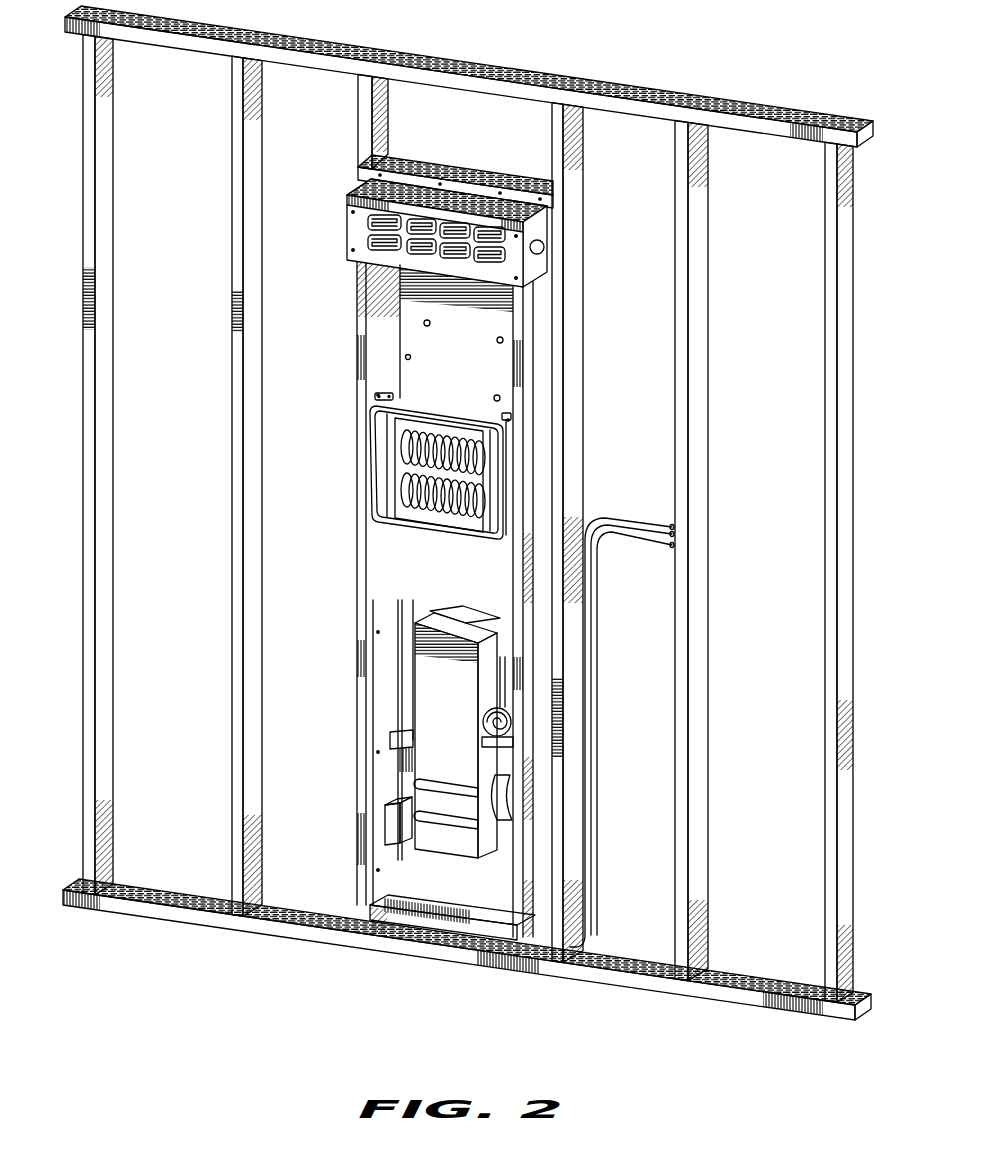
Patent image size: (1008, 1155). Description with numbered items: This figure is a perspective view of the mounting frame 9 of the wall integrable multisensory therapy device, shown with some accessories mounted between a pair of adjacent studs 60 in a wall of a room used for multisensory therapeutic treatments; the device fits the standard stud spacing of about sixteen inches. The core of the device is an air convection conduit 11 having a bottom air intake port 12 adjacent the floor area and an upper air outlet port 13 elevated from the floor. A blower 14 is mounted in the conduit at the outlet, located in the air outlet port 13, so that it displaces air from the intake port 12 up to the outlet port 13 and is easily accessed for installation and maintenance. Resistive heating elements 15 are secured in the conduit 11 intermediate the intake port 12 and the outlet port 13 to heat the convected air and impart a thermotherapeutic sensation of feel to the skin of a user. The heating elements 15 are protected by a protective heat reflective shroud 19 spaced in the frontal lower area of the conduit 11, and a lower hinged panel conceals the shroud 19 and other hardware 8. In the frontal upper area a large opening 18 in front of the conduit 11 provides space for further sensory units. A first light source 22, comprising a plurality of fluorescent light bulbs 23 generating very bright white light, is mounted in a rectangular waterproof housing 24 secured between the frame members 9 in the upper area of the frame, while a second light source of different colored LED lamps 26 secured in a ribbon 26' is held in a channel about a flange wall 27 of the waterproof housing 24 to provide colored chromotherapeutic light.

The studs 60 is at (557, 140).
The upper air outlet port 13 is at (448, 234).
The blower 14 is at (546, 240).
The frame 9 is at (370, 280).
The air convection conduit 11 is at (440, 293).
The flange wall 27 is at (427, 400).
The opening 18 is at (490, 360).
The LED lamps 26 is at (398, 472).
The ribbon 26' is at (579, 474).
The first light source 22 is at (482, 478).
The fluorescent light bulbs 23 is at (405, 490).
The waterproof housing 24 is at (370, 552).
The protective heat reflective shroud 19 is at (445, 650).
The hardware 8 is at (400, 740).
The resistive heating elements 15 is at (457, 823).
The bottom air intake port 12 is at (445, 912).